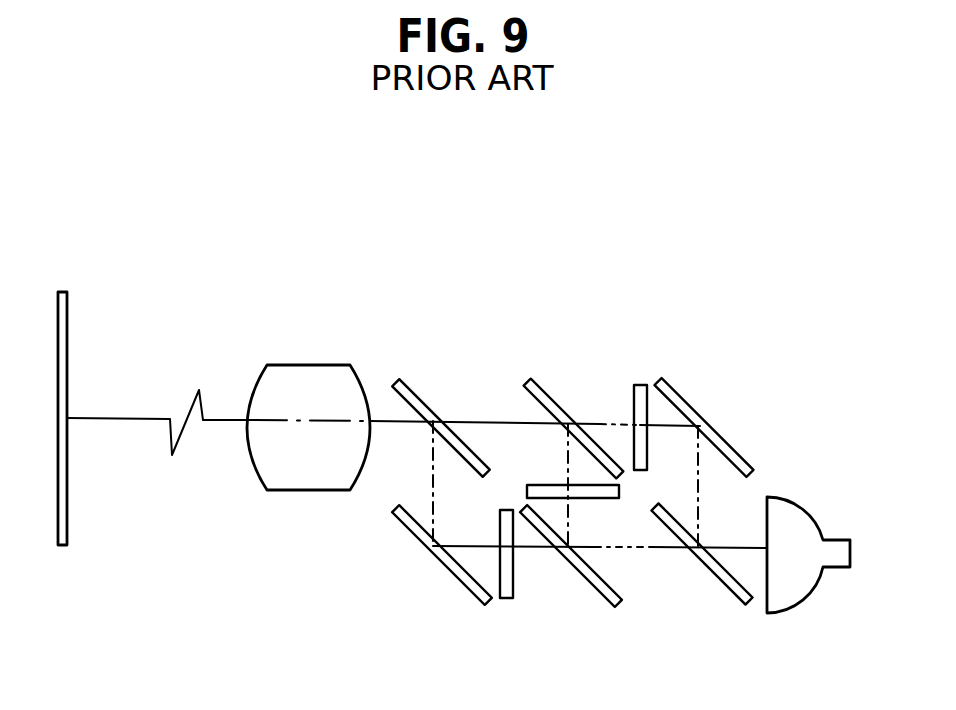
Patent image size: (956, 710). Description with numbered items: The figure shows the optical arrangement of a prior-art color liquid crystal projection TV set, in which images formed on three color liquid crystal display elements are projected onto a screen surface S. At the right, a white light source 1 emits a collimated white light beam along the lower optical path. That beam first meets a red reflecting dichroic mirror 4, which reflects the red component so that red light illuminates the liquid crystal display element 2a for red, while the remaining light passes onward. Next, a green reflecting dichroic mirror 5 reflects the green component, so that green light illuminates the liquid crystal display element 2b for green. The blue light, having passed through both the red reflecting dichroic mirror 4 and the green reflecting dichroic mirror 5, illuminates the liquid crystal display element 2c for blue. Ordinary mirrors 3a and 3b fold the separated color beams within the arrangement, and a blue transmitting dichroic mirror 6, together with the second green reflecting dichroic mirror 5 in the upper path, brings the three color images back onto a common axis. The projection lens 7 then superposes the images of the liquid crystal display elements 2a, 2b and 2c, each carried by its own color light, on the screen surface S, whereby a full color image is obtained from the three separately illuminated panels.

The screen surface S is at (67, 332).
The white light source 1 is at (840, 540).
The liquid crystal display element for red 2a is at (637, 385).
The liquid crystal display element for green 2b is at (532, 485).
The liquid crystal display element for blue 2c is at (507, 598).
The ordinary mirror 3a is at (705, 418).
The ordinary mirror 3b is at (435, 560).
The red reflecting dichroic mirror 4 is at (727, 592).
The green reflecting dichroic mirror 5 is at (527, 378).
The blue transmitting dichroic mirror 6 is at (395, 380).
The projection lens 7 is at (318, 365).